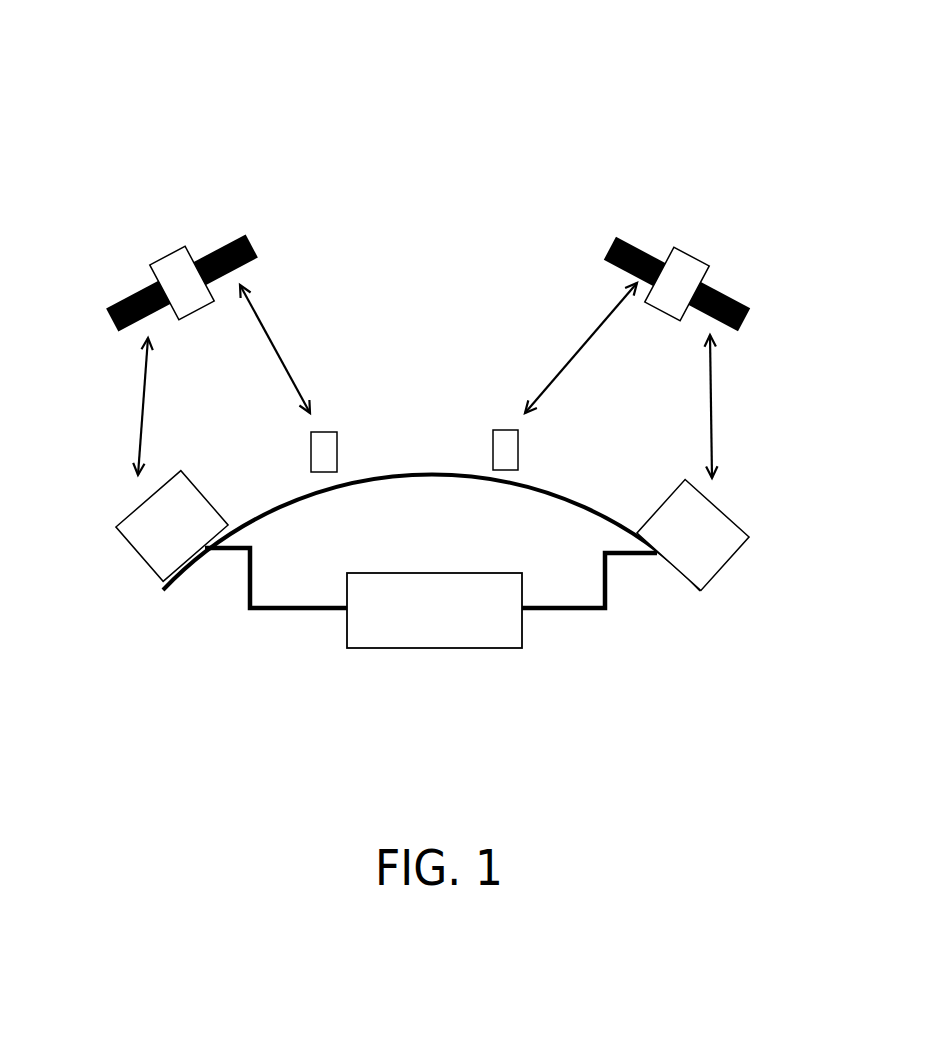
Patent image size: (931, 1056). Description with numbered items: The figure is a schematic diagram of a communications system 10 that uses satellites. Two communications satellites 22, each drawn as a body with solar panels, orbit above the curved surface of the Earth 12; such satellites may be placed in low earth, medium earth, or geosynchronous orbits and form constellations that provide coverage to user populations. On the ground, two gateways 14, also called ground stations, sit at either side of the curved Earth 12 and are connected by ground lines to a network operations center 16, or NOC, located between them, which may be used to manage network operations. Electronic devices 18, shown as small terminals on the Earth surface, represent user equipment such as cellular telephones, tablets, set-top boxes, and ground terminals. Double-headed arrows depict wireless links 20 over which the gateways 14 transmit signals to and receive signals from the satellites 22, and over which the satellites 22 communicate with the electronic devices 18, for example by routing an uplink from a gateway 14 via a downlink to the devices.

The communications system 10 is at (382, 100).
The Earth 12 is at (272, 507).
The gateways 14 is at (138, 553).
The network operations center 16 is at (497, 648).
The electronic devices 18 is at (322, 473).
The wireless links 20 is at (273, 362).
The communications satellites 22 is at (163, 255).